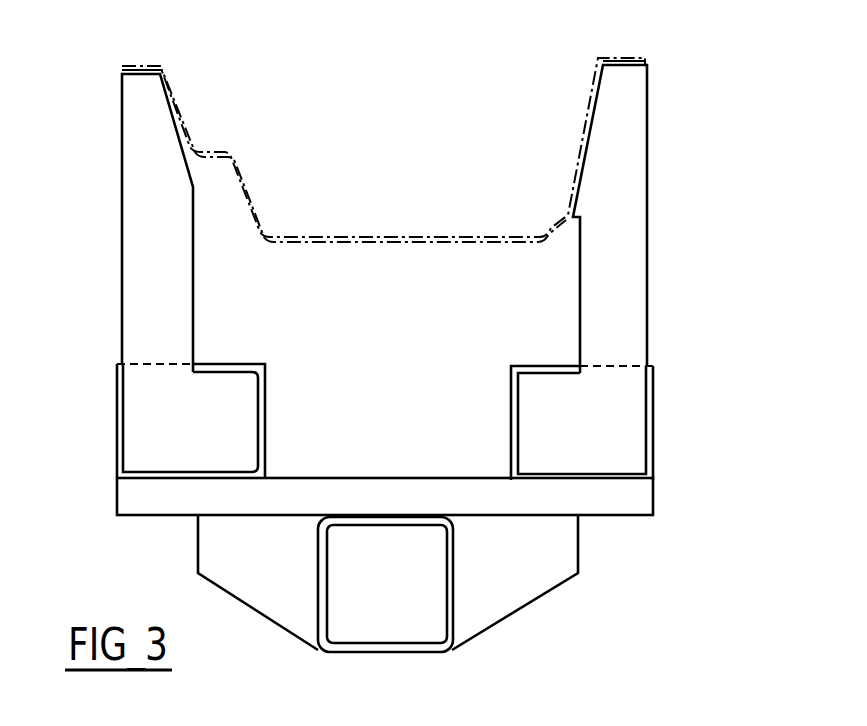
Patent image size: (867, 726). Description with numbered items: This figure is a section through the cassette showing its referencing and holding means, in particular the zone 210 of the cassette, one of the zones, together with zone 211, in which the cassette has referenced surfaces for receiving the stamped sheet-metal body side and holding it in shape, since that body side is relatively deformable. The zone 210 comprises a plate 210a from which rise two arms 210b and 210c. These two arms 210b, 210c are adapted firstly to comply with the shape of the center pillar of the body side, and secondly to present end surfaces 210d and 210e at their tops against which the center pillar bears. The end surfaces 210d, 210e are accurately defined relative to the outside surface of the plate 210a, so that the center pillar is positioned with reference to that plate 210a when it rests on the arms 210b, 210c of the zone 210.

The zone of the cassette 210 is at (404, 330).
The zone of the cassette 211 is at (404, 330).
The plate 210a is at (636, 503).
The arm 210b is at (142, 260).
The arm 210c is at (623, 268).
The end surface 210d is at (138, 73).
The end surface 210e is at (627, 60).